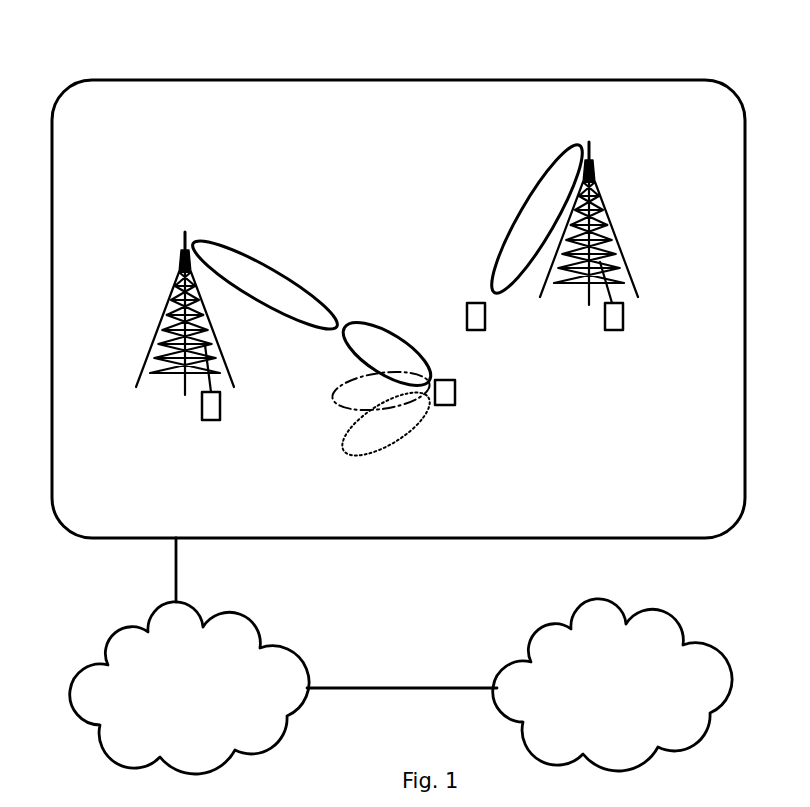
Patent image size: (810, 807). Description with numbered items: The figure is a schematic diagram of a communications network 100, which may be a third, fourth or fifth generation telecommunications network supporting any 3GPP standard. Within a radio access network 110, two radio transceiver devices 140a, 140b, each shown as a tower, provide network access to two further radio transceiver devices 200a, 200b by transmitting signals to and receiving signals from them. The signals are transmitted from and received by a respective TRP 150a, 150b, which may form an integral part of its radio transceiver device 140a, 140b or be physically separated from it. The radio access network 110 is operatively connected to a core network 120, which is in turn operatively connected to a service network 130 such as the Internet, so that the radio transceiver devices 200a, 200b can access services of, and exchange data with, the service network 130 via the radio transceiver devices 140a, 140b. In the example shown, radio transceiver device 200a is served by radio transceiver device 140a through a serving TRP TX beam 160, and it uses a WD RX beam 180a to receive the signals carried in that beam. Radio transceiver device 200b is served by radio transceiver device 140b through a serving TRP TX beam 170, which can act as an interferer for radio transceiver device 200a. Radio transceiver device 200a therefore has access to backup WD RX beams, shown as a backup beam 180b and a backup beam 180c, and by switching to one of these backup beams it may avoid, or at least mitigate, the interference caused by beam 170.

The communications network 100 is at (128, 57).
The radio access network 110 is at (713, 514).
The core network 120 is at (216, 708).
The service network 130 is at (641, 704).
The radio transceiver device 140a is at (201, 407).
The radio transceiver device 140b is at (623, 317).
The TRP 150a is at (183, 250).
The TRP 150b is at (591, 150).
The serving TRP TX beam 160 is at (276, 268).
The serving TRP TX beam 170 is at (521, 213).
The WD RX beam 180a is at (345, 340).
The backup beam 180b is at (400, 442).
The backup WD RX beam 180c is at (337, 396).
The radio transceiver device 200a is at (455, 393).
The radio transceiver device 200b is at (466, 315).